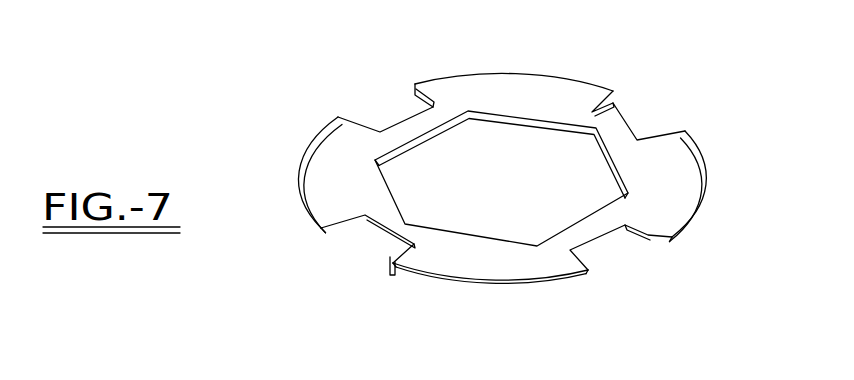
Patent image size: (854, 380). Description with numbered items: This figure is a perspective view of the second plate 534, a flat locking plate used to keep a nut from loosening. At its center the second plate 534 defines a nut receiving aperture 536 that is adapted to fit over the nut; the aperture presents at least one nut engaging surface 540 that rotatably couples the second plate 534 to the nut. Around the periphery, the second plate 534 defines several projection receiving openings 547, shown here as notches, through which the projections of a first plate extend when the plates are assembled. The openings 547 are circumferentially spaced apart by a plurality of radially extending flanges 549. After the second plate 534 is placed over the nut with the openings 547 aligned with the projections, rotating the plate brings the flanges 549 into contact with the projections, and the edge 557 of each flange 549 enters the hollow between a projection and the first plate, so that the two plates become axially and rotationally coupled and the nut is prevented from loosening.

The second plate 534 is at (321, 75).
The nut receiving aperture 536 is at (427, 193).
The nut engaging surface 540 is at (524, 121).
The projection receiving opening 547 is at (387, 115).
The radially extending flange 549 is at (498, 72).
The edge of flange 557 is at (618, 104).